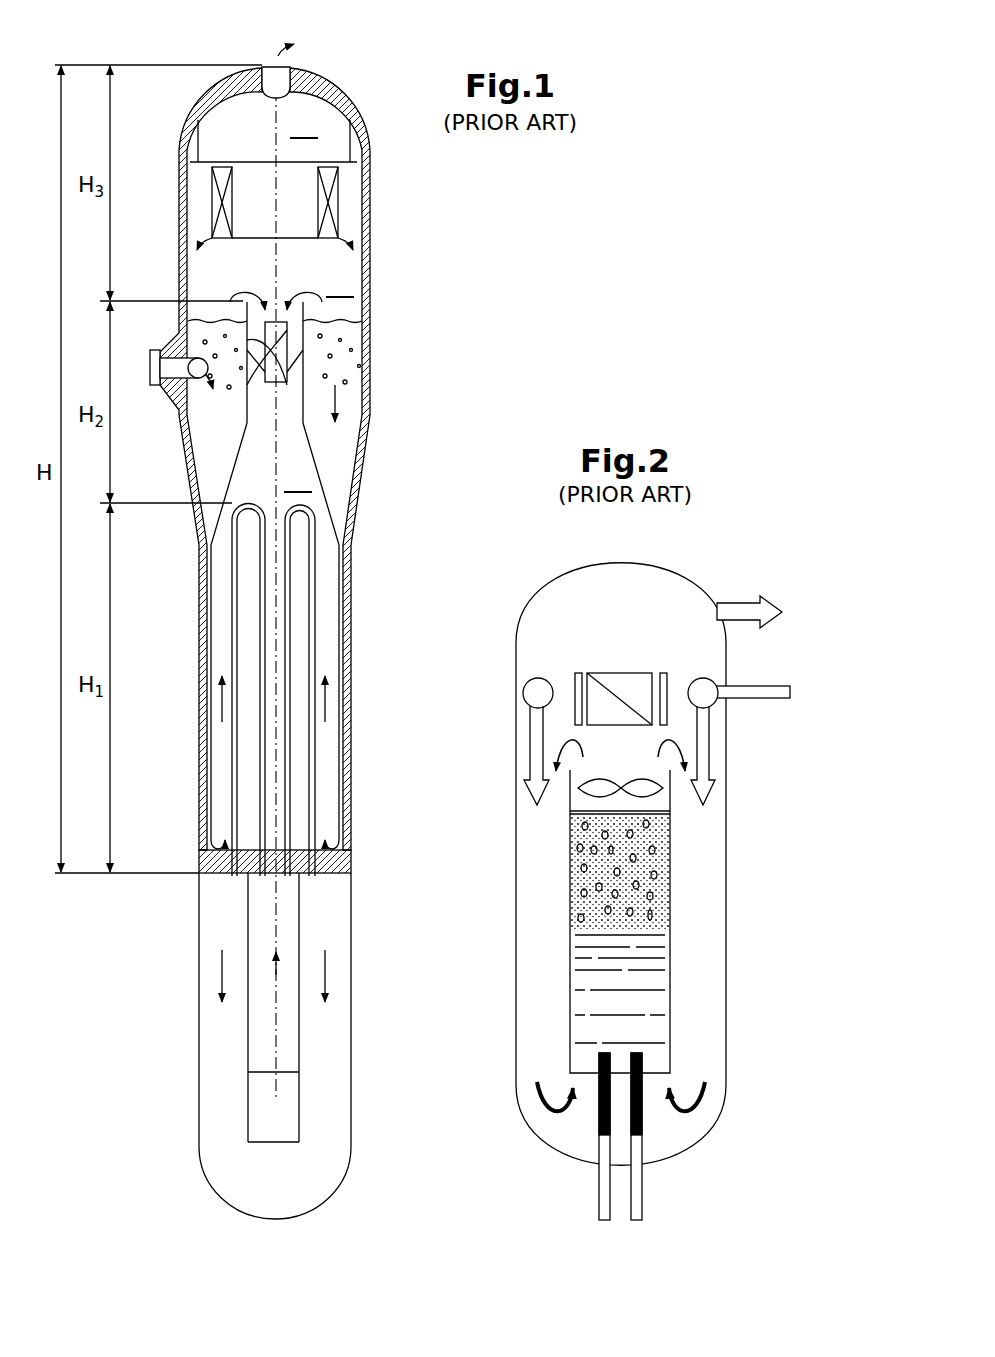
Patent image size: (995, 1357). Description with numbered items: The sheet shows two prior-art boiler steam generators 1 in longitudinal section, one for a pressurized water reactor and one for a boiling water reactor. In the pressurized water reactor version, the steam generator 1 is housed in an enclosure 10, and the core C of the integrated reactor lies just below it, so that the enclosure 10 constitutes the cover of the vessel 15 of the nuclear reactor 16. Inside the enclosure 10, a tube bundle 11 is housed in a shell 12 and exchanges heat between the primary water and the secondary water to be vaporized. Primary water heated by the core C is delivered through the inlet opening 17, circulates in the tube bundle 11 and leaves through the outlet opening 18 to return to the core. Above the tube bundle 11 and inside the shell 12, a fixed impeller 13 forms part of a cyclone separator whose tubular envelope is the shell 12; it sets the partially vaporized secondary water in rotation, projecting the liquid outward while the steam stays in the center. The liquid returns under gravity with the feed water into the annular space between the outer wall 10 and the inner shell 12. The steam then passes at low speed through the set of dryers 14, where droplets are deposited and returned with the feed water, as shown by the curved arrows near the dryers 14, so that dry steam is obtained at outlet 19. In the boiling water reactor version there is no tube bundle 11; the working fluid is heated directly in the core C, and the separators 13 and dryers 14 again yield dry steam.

In FIG. 1, the boiler steam generator 1 is at (434, 261).
In FIG. 2, the boiler steam generator 1 is at (558, 651).
In FIG. 1, the enclosure 10 is at (207, 573).
In FIG. 2, the enclosure 10 is at (537, 597).
In FIG. 1, the tube bundle 11 is at (237, 729).
In FIG. 1, the shell 12 is at (210, 662).
In FIG. 1, the impeller 13 is at (280, 348).
In FIG. 2, the impeller 13 is at (578, 797).
In FIG. 1, the dryers 14 is at (212, 205).
In FIG. 2, the dryers 14 is at (645, 672).
In FIG. 1, the vessel 15 is at (351, 982).
In FIG. 1, the nuclear reactor 16 is at (364, 1107).
In FIG. 1, the inlet opening 17 is at (286, 876).
In FIG. 1, the outlet opening 18 is at (235, 876).
In FIG. 1, the outlet 19 is at (268, 67).
In FIG. 1, the core C is at (285, 1127).